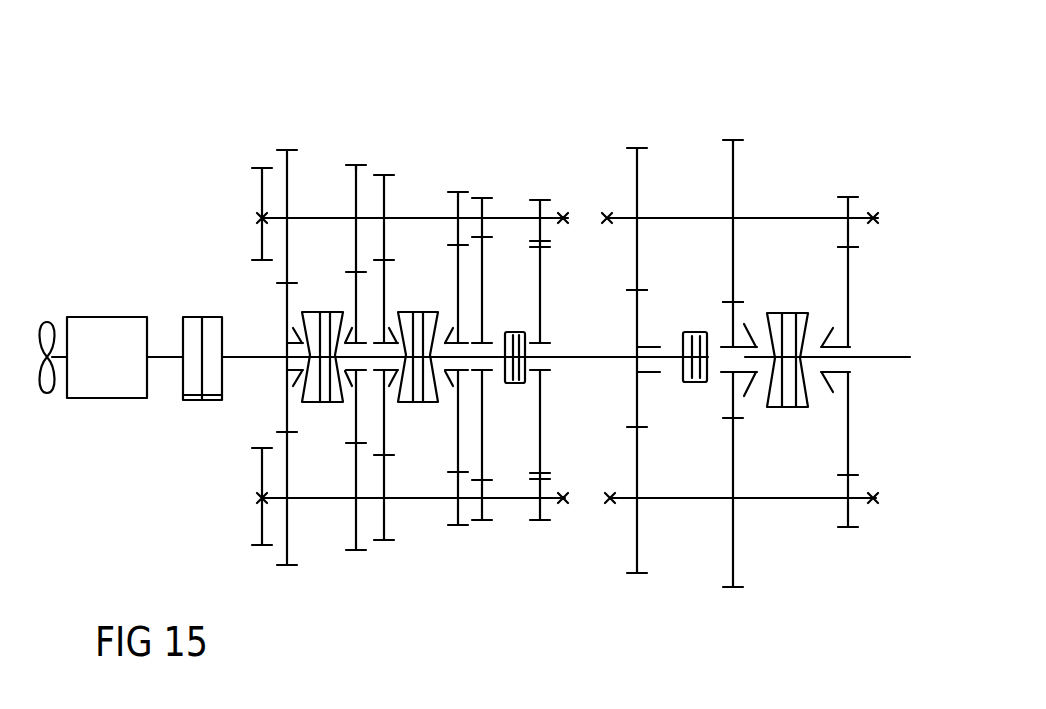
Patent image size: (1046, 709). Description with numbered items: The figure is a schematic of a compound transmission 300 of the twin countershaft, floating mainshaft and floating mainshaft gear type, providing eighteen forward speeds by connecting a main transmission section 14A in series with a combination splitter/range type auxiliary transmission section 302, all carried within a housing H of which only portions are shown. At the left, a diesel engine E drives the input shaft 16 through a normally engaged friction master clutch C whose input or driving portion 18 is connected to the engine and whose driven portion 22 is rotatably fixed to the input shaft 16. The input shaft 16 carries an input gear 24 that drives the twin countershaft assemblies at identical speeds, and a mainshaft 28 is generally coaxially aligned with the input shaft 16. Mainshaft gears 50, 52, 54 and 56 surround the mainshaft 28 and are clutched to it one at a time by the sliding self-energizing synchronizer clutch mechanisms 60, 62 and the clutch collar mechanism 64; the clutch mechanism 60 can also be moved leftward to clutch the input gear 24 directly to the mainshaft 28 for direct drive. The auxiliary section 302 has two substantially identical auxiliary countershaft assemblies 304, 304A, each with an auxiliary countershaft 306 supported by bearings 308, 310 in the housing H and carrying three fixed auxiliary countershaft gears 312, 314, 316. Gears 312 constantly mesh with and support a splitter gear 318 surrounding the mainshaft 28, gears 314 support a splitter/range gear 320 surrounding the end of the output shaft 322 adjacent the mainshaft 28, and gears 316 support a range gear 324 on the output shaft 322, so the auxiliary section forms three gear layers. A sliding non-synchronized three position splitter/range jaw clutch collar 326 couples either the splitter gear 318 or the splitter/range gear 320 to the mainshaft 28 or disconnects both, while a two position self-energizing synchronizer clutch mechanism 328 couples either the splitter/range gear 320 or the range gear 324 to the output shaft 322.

The diesel engine E is at (107, 357).
The friction master clutch C is at (197, 305).
The housing H is at (260, 196).
The input shaft 16 is at (260, 354).
The input or driving portion 18 is at (190, 401).
The driven portion 22 is at (211, 401).
The input gear 24 is at (290, 303).
The main transmission section 14A is at (467, 166).
The mainshaft 28 is at (593, 358).
The mainshaft gear 50 is at (356, 272).
The mainshaft gear 52 is at (387, 282).
The mainshaft gear 54 is at (458, 297).
The mainshaft gear 56 is at (483, 308).
The self-energizing synchronizer clutch mechanism 60 is at (326, 417).
The self-energizing synchronizer clutch mechanism 62 is at (420, 416).
The clutch collar mechanism 64 is at (515, 400).
The compound transmission 300 is at (590, 149).
The auxiliary transmission section 302 is at (800, 149).
The auxiliary countershaft assembly 304 is at (806, 204).
The auxiliary countershaft assembly 304A is at (792, 540).
The auxiliary countershaft 306 is at (667, 216).
The bearing 308 is at (605, 213).
The bearing 310 is at (880, 222).
The auxiliary countershaft gear 312 is at (638, 163).
The auxiliary countershaft gear 314 is at (735, 195).
The auxiliary countershaft gear 316 is at (848, 202).
The auxiliary section splitter gear 318 is at (637, 310).
The auxiliary section splitter/range gear 320 is at (732, 307).
The output shaft 322 is at (885, 356).
The auxiliary section range gear 324 is at (853, 292).
The splitter/range jaw clutch collar 326 is at (701, 316).
The self-energizing synchronizer clutch mechanism 328 is at (787, 299).